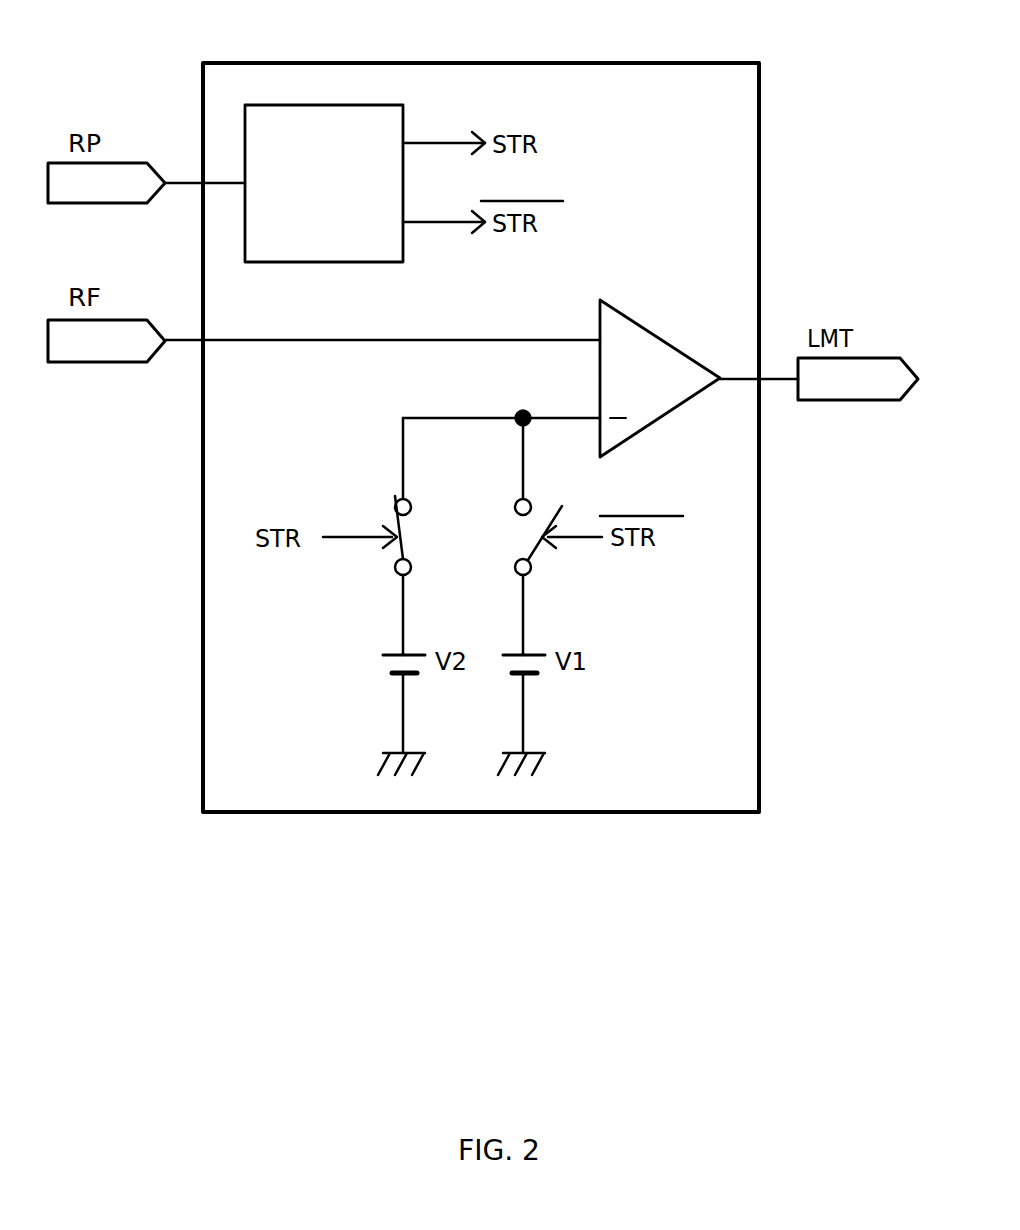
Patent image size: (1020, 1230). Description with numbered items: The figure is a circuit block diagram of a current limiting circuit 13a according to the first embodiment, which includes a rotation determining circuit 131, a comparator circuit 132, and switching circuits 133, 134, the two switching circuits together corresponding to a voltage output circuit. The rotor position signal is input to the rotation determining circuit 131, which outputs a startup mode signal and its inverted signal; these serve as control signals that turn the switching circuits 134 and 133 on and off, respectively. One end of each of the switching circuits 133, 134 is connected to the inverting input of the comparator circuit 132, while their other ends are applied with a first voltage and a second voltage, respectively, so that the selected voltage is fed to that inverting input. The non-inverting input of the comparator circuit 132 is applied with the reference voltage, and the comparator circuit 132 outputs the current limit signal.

The current limiting circuit 13a is at (643, 62).
The rotation determining circuit 131 is at (323, 263).
The comparator circuit 132 is at (658, 336).
The switching circuit 133 is at (514, 570).
The switching circuit 134 is at (411, 503).